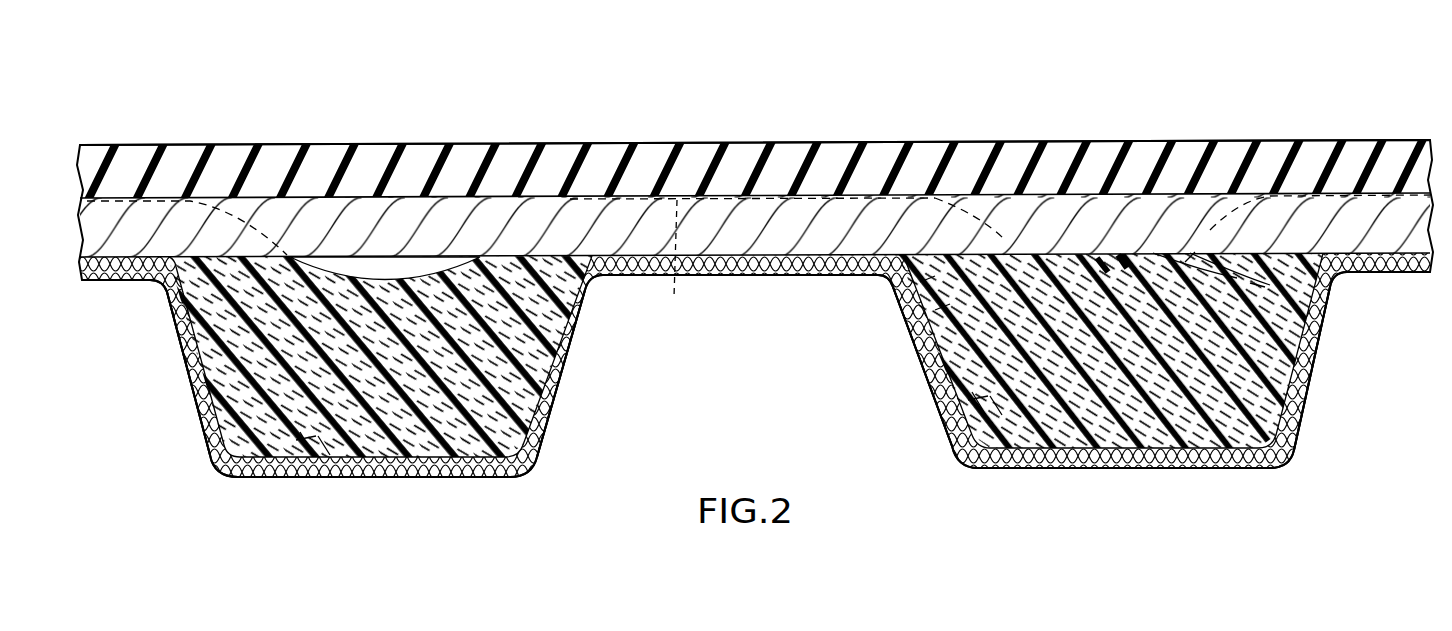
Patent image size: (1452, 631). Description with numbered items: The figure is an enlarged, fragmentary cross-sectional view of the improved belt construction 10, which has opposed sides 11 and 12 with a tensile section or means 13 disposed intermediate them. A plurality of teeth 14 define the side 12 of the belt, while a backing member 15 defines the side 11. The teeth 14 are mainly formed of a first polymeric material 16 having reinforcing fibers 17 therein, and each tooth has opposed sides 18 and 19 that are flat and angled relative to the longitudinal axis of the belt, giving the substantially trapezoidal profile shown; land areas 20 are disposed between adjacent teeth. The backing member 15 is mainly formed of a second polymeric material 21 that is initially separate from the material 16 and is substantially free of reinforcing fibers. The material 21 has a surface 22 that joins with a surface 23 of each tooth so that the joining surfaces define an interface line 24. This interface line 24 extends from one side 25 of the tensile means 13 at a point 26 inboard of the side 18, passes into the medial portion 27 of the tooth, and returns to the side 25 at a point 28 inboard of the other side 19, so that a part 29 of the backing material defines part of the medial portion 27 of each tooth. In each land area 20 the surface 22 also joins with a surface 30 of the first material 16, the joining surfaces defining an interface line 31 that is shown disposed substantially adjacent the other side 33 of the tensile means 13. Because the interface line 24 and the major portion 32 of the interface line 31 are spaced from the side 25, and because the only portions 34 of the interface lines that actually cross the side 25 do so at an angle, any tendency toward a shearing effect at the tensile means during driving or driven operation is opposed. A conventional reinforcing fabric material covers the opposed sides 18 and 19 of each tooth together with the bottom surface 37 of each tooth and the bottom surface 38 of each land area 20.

The belt construction 10 is at (1236, 78).
The side 11 is at (492, 143).
The side 12 is at (423, 478).
The tensile section or means 13 is at (808, 205).
The teeth 14 is at (558, 428).
The backing member 15 is at (758, 148).
The first polymeric material 16 is at (967, 372).
The reinforcing fibers 17 is at (327, 440).
The side 18 is at (188, 393).
The side 19 is at (572, 377).
The land areas 20 is at (748, 278).
The second polymeric material 21 is at (668, 152).
The surface 22 is at (825, 278).
The surface 23 is at (1122, 258).
The interface line 24 is at (1243, 322).
The side 25 is at (920, 282).
The point 26 is at (935, 310).
The medial portion 27 is at (1098, 258).
The point 28 is at (1265, 287).
The part 29 is at (1195, 252).
The surface 30 is at (862, 265).
The interface line 31 is at (659, 263).
The major portion 32 is at (632, 195).
The side 33 is at (722, 195).
The portions 34 is at (1005, 245).
The bottom surface 37 is at (1107, 468).
The bottom surface 38 is at (697, 277).